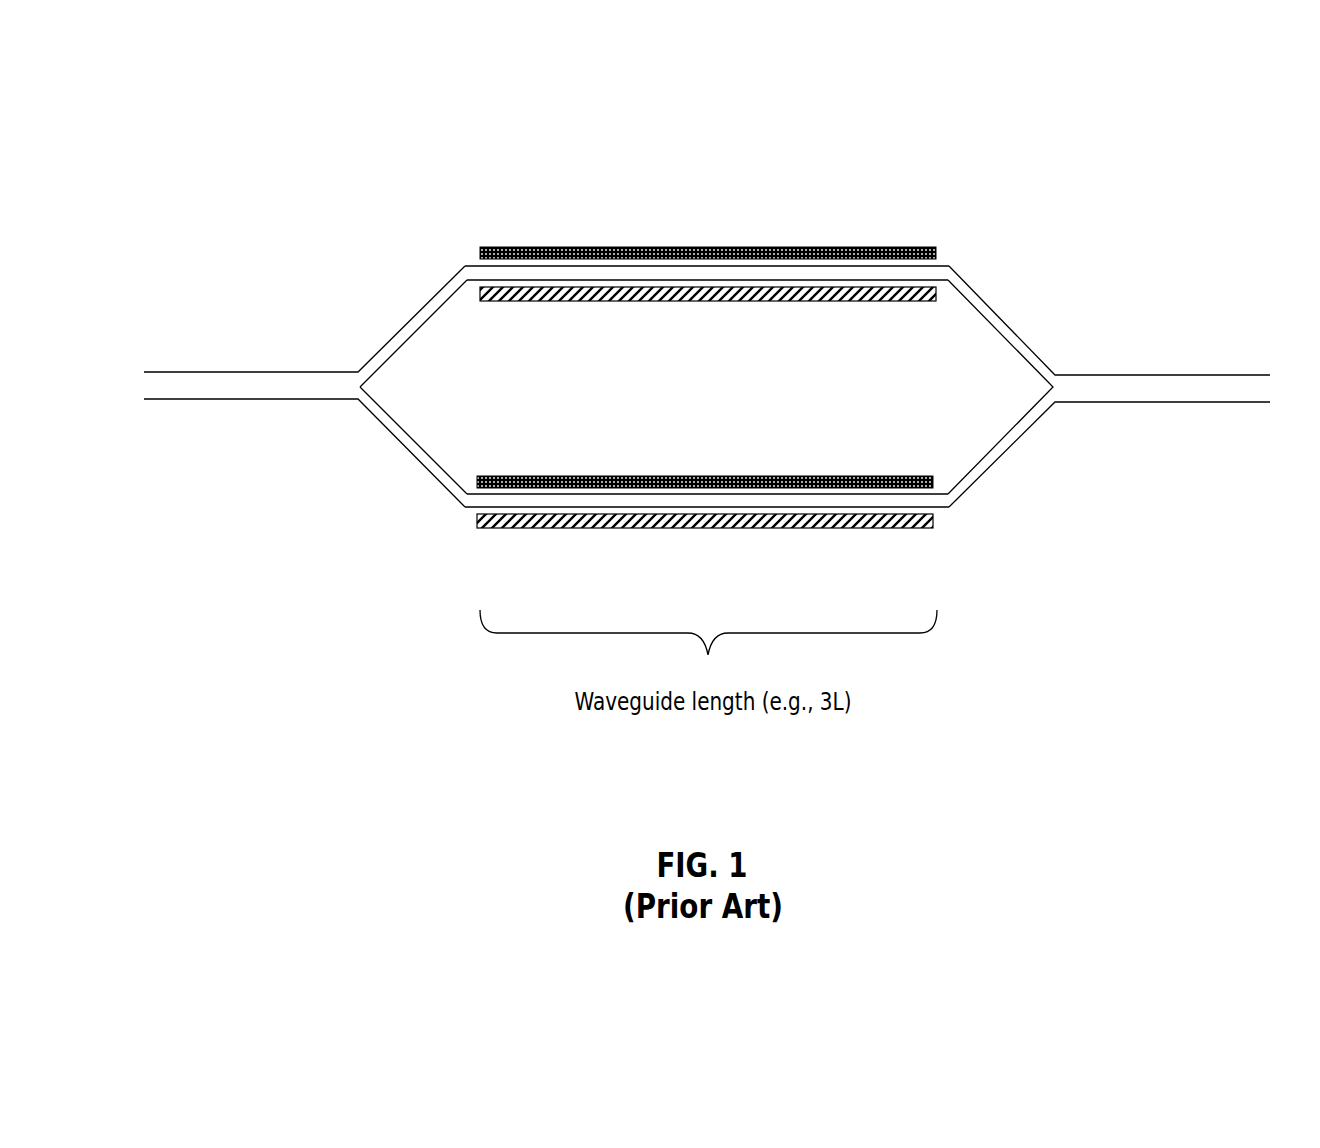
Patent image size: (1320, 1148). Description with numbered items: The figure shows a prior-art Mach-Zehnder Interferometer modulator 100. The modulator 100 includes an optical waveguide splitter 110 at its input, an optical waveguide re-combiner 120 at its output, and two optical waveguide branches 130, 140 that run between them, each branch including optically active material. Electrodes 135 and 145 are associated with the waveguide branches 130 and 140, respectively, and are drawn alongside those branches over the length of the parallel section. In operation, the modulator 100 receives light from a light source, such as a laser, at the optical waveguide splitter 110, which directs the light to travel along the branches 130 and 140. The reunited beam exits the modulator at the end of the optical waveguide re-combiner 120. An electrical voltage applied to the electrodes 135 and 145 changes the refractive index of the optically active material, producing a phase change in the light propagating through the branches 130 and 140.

The modulator 100 is at (707, 429).
The optical waveguide splitter 110 is at (360, 387).
The optical waveguide re-combiner 120 is at (1028, 412).
The optical waveguide branch 130 is at (938, 275).
The optical waveguide branch 140 is at (937, 502).
The electrode 135 is at (528, 287).
The electrode 145 is at (540, 514).